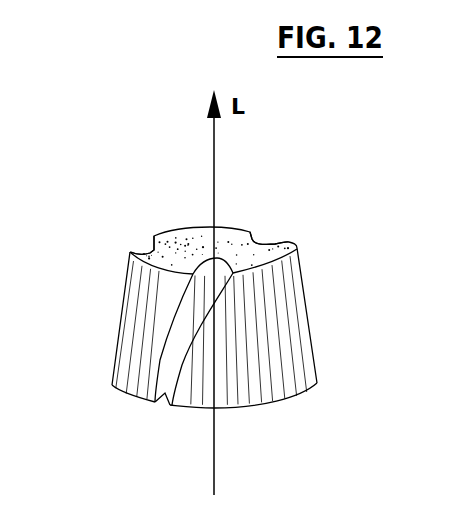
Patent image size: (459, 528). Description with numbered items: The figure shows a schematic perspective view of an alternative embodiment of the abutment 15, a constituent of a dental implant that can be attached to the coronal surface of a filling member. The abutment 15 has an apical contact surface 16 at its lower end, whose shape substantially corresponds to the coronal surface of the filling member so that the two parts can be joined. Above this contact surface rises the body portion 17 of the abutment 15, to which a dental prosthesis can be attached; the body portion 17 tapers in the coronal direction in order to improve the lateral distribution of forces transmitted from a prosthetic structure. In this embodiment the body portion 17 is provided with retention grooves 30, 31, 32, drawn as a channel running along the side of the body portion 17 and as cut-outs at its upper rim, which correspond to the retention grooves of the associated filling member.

The abutment 15 is at (124, 206).
The apical contact surface 16 is at (265, 407).
The body portion 17 is at (284, 314).
The retention groove 30 is at (163, 400).
The retention groove 31 is at (268, 242).
The retention groove 32 is at (147, 251).